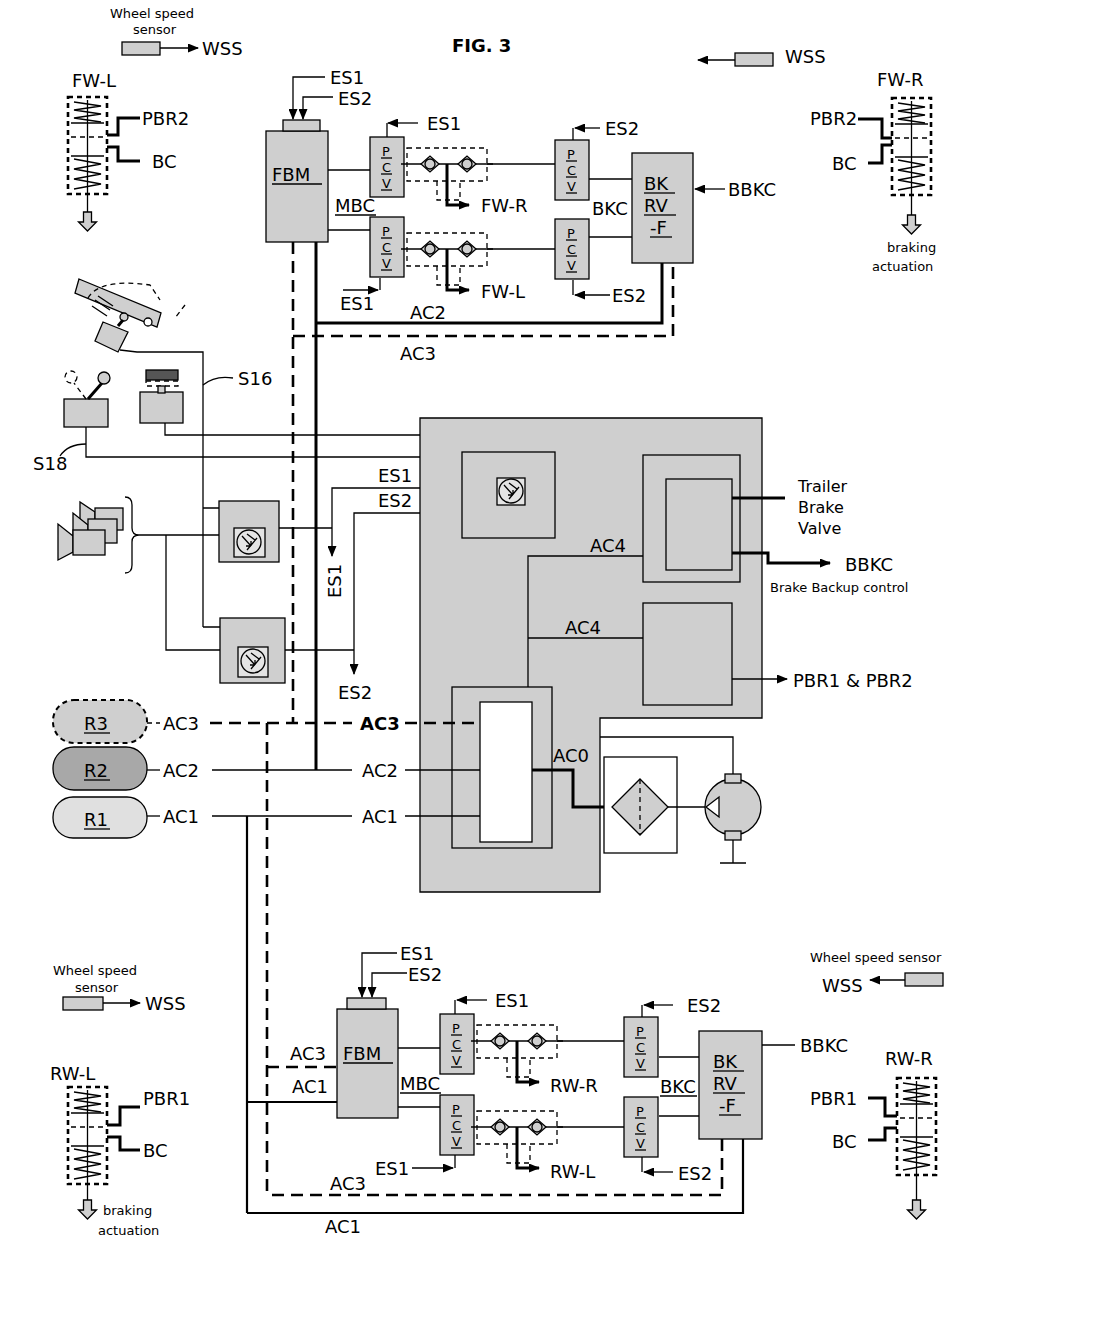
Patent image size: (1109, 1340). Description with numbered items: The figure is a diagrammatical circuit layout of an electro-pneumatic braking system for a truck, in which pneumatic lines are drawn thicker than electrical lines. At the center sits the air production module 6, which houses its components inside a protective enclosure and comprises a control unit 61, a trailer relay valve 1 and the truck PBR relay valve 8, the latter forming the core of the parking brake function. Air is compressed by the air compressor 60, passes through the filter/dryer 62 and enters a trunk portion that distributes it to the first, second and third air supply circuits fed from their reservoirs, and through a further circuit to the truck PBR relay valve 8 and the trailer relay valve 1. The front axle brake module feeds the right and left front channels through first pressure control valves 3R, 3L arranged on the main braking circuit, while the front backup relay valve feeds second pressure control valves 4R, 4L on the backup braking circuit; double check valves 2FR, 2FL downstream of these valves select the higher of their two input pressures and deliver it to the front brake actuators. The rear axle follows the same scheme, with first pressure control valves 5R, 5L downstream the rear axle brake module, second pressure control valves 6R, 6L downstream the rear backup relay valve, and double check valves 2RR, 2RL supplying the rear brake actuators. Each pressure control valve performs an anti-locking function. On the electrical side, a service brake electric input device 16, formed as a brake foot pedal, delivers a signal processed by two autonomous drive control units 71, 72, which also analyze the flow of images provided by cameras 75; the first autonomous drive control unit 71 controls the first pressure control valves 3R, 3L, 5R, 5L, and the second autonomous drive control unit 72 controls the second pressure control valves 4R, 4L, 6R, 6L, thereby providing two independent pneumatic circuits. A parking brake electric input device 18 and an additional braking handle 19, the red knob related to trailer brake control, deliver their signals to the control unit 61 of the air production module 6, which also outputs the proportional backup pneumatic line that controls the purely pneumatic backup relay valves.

The trailer relay valve 1 is at (684, 477).
The air production module 6 is at (734, 416).
The truck PBR relay valve 8 is at (641, 663).
The service brake electric input device 16 is at (100, 338).
The parking brake electric input device 18 is at (64, 415).
The additional braking handle 19 is at (140, 400).
The air compressor 60 is at (757, 786).
The control unit 61 is at (533, 452).
The filter/dryer 62 is at (655, 825).
The first autonomous drive control unit 71 is at (260, 525).
The second autonomous drive control unit 72 is at (263, 644).
The cameras 75 is at (93, 556).
The double check valve 2FR is at (472, 147).
The double check valve 2FL is at (480, 233).
The double check valve 2RR is at (540, 1025).
The double check valve 2RL is at (550, 1110).
The pressure control valve 3R is at (370, 167).
The pressure control valve 3L is at (370, 242).
The pressure control valve 4R is at (557, 170).
The pressure control valve 4L is at (559, 249).
The pressure control valve 5R is at (440, 1044).
The pressure control valve 5L is at (443, 1125).
The pressure control valve 6R is at (627, 1047).
The pressure control valve 6L is at (629, 1127).